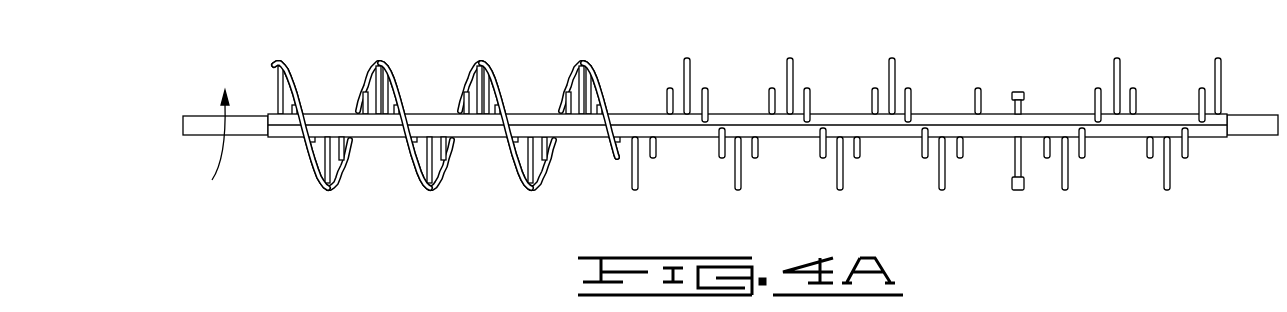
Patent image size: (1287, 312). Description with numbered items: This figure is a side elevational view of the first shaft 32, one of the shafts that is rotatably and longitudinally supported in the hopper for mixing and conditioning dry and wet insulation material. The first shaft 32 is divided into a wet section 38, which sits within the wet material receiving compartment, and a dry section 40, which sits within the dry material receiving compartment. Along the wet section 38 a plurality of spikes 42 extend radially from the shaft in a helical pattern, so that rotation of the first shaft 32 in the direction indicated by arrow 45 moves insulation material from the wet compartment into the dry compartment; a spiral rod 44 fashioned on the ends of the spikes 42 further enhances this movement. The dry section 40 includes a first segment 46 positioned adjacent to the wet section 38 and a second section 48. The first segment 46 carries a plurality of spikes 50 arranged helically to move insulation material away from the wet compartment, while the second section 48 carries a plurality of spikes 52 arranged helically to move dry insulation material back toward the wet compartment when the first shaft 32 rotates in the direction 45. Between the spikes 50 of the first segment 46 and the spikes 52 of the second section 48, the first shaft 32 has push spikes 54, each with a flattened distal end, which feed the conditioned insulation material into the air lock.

The first shaft 32 is at (253, 116).
The wet section 38 is at (272, 54).
The dry section 40 is at (628, 54).
The spikes 42 is at (329, 170).
The spiral rod 44 is at (431, 170).
The arrow 45 is at (212, 178).
The first segment 46 is at (632, 193).
The second section 48 is at (1043, 195).
The spikes 50 is at (793, 76).
The spikes 52 is at (1222, 80).
The push spikes 54 is at (1012, 177).